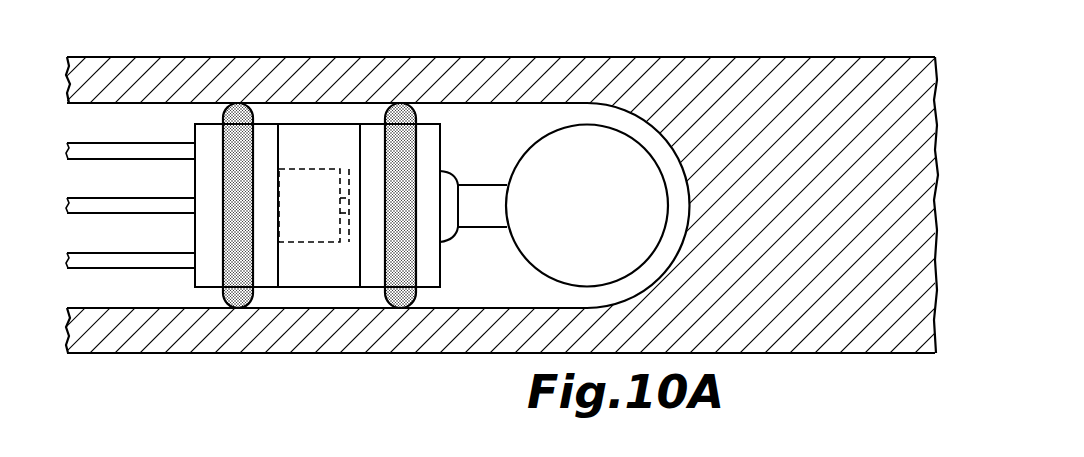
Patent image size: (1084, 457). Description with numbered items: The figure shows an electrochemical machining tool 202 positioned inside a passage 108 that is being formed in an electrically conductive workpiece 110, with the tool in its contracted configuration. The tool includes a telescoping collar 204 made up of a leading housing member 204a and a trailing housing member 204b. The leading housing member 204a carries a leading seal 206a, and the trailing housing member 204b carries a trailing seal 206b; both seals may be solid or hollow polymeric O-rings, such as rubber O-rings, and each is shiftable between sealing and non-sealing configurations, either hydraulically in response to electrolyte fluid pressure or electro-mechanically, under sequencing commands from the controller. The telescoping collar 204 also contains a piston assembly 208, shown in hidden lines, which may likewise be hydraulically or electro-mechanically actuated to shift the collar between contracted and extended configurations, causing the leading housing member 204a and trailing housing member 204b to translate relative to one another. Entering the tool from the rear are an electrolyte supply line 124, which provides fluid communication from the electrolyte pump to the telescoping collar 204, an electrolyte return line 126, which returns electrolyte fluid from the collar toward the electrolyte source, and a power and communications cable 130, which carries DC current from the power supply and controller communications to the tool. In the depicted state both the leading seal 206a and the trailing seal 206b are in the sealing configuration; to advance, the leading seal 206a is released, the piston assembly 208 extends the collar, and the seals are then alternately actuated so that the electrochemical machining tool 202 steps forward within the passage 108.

The electrically conductive workpiece 110 is at (765, 70).
The passage 108 is at (537, 103).
The electrochemical machining tool 202 is at (343, 122).
The telescoping collar 204 is at (304, 123).
The leading housing member 204a is at (432, 127).
The trailing housing member 204b is at (210, 128).
The leading seal 206a is at (399, 308).
The trailing seal 206b is at (238, 308).
The piston assembly 208 is at (308, 236).
The electrolyte supply line 124 is at (148, 143).
The electrolyte return line 126 is at (148, 198).
The power and communications cable 130 is at (148, 253).